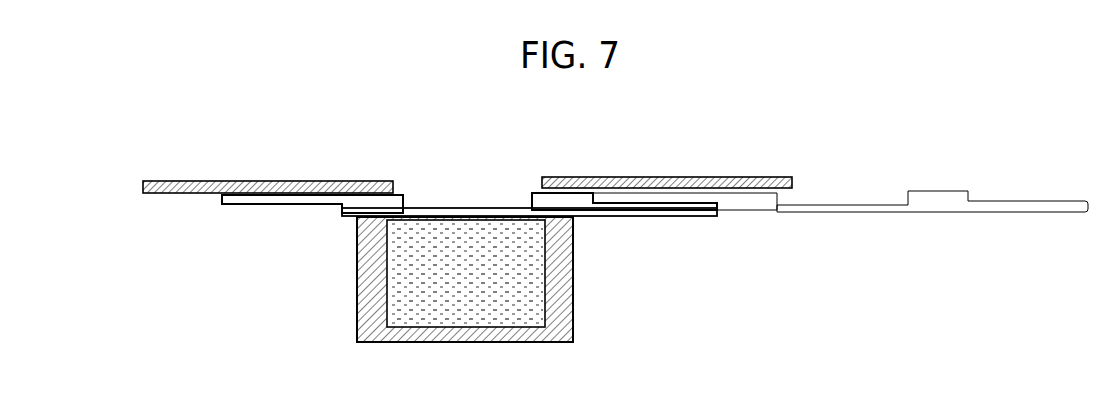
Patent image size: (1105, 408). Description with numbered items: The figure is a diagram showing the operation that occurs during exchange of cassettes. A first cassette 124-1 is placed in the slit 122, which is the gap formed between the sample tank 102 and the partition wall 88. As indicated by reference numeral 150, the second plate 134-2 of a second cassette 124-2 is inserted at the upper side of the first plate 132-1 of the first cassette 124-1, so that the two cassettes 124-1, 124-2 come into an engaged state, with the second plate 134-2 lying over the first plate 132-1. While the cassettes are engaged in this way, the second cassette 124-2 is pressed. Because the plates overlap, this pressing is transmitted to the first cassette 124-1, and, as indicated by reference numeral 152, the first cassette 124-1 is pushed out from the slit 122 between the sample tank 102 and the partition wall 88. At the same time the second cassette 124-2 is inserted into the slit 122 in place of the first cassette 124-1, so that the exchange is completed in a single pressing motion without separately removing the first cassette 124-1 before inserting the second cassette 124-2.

The partition wall 88 is at (718, 176).
The sample tank 102 is at (580, 278).
The slit 122 is at (327, 218).
The first cassette 124-1 is at (600, 222).
The second cassette 124-2 is at (873, 225).
The first plate 132-1 is at (661, 218).
The second plate 134-2 is at (655, 176).
The insertion operation of second cassette 150 is at (785, 226).
The push-out operation of first cassette 152 is at (200, 205).